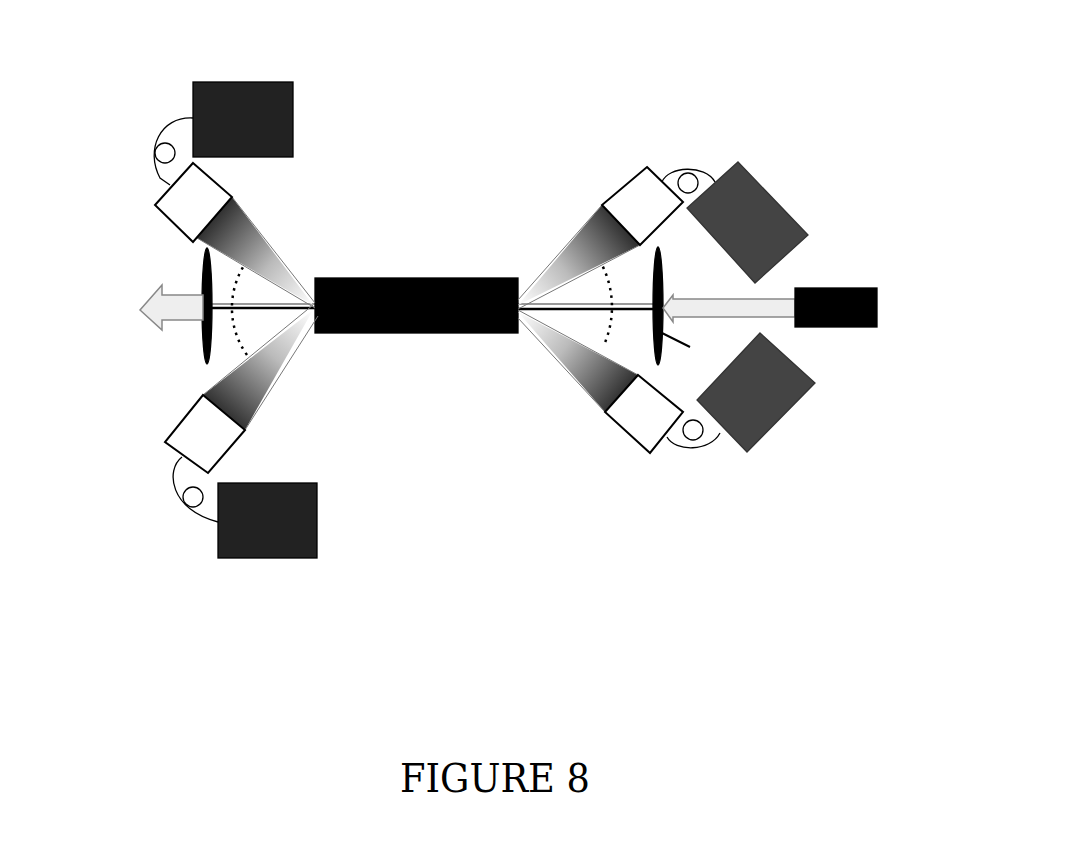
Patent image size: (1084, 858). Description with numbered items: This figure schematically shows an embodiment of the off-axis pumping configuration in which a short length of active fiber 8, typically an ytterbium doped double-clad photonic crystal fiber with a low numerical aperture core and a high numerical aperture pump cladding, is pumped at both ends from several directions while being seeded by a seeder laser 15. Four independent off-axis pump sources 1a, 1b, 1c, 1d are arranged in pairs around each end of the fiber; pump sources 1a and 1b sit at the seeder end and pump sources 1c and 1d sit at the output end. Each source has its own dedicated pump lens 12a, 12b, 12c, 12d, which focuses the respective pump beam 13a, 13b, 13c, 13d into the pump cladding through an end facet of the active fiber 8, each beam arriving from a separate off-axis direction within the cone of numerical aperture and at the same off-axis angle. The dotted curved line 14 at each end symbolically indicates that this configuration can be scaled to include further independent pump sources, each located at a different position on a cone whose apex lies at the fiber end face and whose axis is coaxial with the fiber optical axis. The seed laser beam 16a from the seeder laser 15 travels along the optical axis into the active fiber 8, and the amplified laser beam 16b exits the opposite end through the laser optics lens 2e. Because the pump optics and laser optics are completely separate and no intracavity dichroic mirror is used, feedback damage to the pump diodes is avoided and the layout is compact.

The off-axis pump source 1a is at (753, 182).
The off-axis pump source 1b is at (763, 415).
The off-axis pump source 1c is at (293, 113).
The off-axis pump source 1d is at (274, 558).
The laser optics lens 2e is at (200, 342).
The active fiber 8 is at (411, 333).
The dedicated pump lens 12a is at (613, 188).
The dedicated pump lens 12b is at (618, 425).
The dedicated pump lens 12c is at (168, 215).
The dedicated pump lens 12d is at (192, 418).
The pump beam 13a is at (578, 235).
The pump beam 13b is at (558, 357).
The pump beam 13c is at (265, 242).
The pump beam 13d is at (278, 372).
The dotted curved line 14 is at (422, 273).
The seeder laser 15 is at (870, 327).
The seed laser beam 16a is at (753, 300).
The amplified laser beam 16b is at (145, 298).